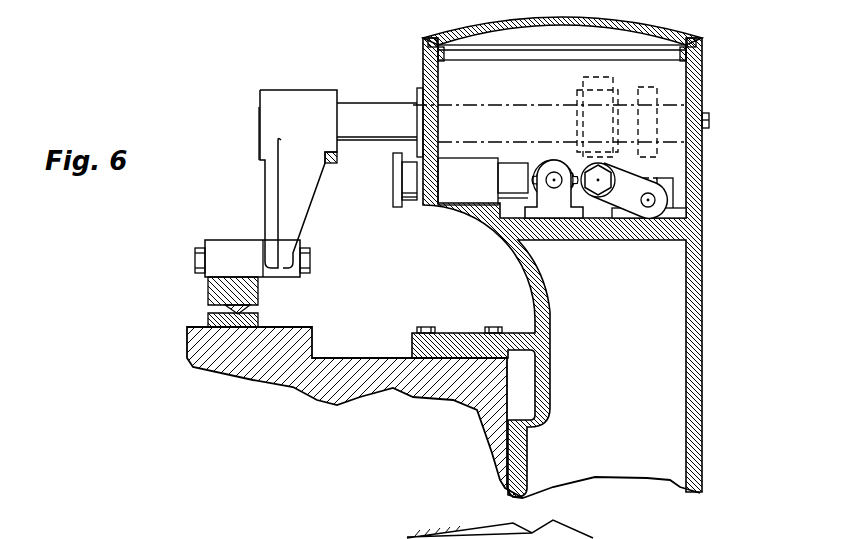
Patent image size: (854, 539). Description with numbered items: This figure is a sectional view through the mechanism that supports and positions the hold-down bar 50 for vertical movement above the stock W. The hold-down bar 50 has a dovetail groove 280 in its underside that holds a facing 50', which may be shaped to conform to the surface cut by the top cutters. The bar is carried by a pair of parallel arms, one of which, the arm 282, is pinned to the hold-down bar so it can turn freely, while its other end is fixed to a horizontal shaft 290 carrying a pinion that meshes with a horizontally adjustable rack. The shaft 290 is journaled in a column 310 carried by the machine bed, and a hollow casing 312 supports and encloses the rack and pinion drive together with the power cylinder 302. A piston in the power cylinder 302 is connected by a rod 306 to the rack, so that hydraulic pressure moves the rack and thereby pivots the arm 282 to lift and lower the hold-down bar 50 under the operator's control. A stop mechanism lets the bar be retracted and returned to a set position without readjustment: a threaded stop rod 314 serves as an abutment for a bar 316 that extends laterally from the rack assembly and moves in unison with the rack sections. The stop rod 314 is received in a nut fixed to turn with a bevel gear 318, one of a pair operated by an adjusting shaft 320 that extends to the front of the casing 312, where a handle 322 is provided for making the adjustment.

The column 310 is at (702, 70).
The hollow casing 312 is at (423, 72).
The horizontal shaft 290 is at (375, 112).
The arm 282 is at (272, 200).
The handle 322 is at (399, 207).
The adjusting shaft 320 is at (512, 165).
The bevel gear 318 is at (552, 157).
The stop rod 314 is at (556, 188).
The bar 316 is at (594, 197).
The power cylinder 302 is at (660, 180).
The rod 306 is at (648, 207).
The hold-down bar 50 is at (214, 291).
The facing 50' is at (213, 317).
The dovetail groove 280 is at (252, 305).
The stock W is at (310, 340).